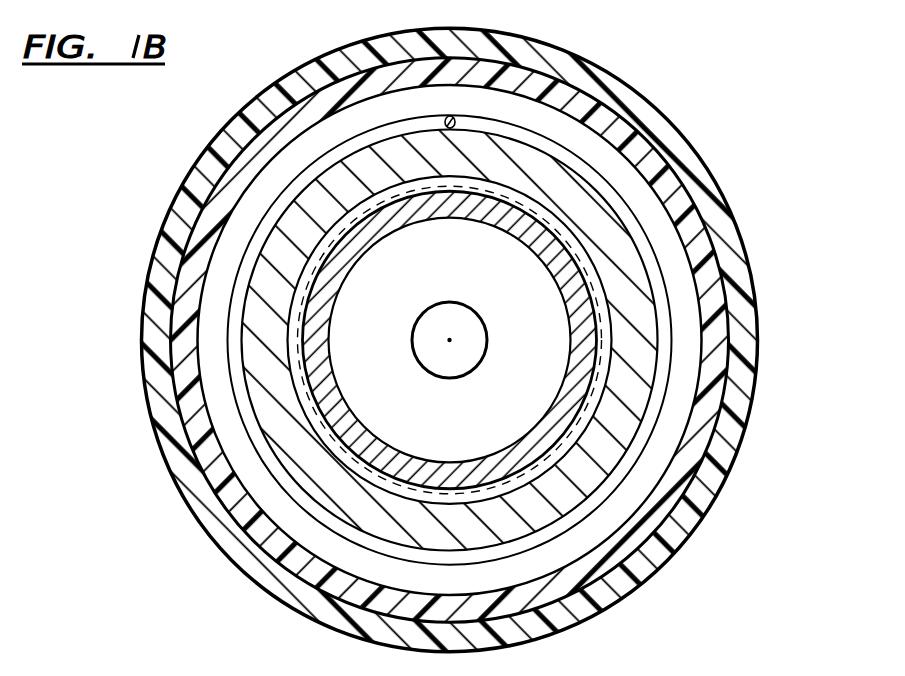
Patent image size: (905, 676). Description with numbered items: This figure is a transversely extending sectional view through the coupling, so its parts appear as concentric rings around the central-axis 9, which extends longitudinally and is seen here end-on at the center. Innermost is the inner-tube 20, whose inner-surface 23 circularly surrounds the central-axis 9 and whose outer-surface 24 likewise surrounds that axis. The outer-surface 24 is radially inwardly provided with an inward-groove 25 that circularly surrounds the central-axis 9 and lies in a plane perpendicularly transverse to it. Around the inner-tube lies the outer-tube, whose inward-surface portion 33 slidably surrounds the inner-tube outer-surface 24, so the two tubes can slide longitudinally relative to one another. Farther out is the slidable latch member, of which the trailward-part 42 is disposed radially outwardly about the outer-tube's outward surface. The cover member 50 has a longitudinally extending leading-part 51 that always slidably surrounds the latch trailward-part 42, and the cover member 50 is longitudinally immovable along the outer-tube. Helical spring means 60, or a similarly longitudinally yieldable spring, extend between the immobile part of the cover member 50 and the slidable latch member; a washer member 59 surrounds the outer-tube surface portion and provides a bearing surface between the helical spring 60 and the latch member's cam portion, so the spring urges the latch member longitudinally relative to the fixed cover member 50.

The central-axis 9 is at (424, 346).
The inner-tube 20 is at (450, 340).
The inner-surface 23 is at (450, 340).
The outer-surface 24 is at (450, 340).
The inward-surface portion 33 is at (450, 340).
The inward-groove 25 is at (450, 340).
The trailward-part 42 is at (514, 340).
The cover member 50 is at (500, 339).
The leading-part 51 is at (479, 339).
The washer member 59 is at (555, 333).
The helical spring means 60 is at (450, 354).